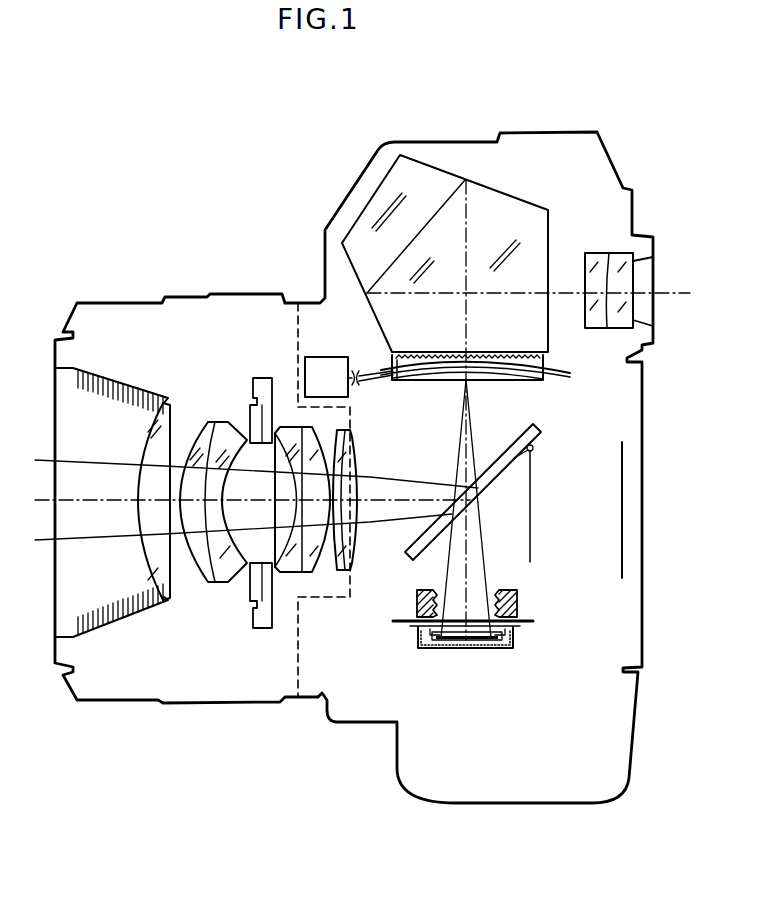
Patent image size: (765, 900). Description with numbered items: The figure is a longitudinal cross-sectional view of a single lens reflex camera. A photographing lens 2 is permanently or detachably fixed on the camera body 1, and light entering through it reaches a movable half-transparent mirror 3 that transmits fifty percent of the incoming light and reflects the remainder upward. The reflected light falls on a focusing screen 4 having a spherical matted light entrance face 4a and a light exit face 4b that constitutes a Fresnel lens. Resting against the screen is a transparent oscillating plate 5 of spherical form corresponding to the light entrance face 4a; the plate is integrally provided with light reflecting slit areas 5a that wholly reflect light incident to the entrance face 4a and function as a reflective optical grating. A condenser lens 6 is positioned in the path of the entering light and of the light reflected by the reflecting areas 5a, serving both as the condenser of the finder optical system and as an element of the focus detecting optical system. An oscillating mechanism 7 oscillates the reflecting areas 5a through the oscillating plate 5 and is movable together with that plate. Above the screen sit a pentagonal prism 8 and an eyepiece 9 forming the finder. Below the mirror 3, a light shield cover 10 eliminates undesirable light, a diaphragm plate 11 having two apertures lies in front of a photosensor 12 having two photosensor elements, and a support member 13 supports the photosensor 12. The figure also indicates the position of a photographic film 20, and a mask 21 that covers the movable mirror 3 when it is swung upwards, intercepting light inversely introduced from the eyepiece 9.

The camera body 1 is at (450, 805).
The photographing lens 2 is at (207, 707).
The movable half-transparent mirror 3 is at (531, 476).
The focusing screen 4 is at (543, 362).
The light entrance face 4a is at (400, 380).
The light exit face 4b is at (402, 354).
The transparent oscillating plate 5 is at (557, 376).
The light reflecting slit areas 5a is at (477, 371).
The condenser lens 6 is at (518, 374).
The oscillating mechanism 7 is at (305, 371).
The pentagonal prism 8 is at (512, 204).
The eyepiece 9 is at (617, 253).
The light shield cover 10 is at (517, 597).
The diaphragm plate 11 is at (532, 620).
The photosensor 12 is at (481, 648).
The support member 13 is at (513, 639).
The photographic film 20 is at (623, 505).
The mask 21 is at (530, 534).